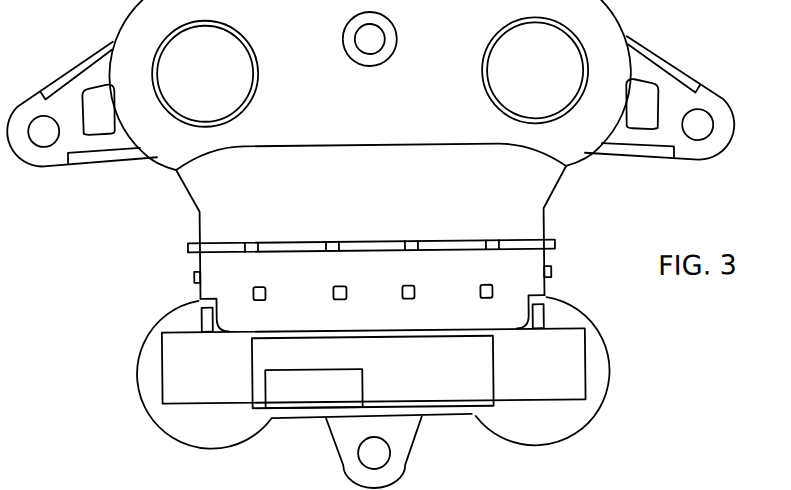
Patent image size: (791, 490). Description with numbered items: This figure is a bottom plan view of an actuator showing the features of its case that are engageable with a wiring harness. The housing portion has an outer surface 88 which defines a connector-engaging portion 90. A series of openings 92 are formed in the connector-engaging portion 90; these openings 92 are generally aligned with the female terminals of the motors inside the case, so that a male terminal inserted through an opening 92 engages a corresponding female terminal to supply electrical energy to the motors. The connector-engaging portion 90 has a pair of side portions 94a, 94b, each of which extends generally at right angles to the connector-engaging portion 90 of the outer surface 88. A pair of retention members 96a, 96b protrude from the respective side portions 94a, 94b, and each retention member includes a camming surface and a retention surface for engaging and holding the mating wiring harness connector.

The outer surface 88 is at (386, 114).
The connector-engaging portion 90 is at (382, 283).
The openings 92 is at (259, 287).
The side portion 94a is at (546, 289).
The side portion 94b is at (199, 291).
The retention member 96a is at (552, 270).
The retention member 96b is at (194, 275).